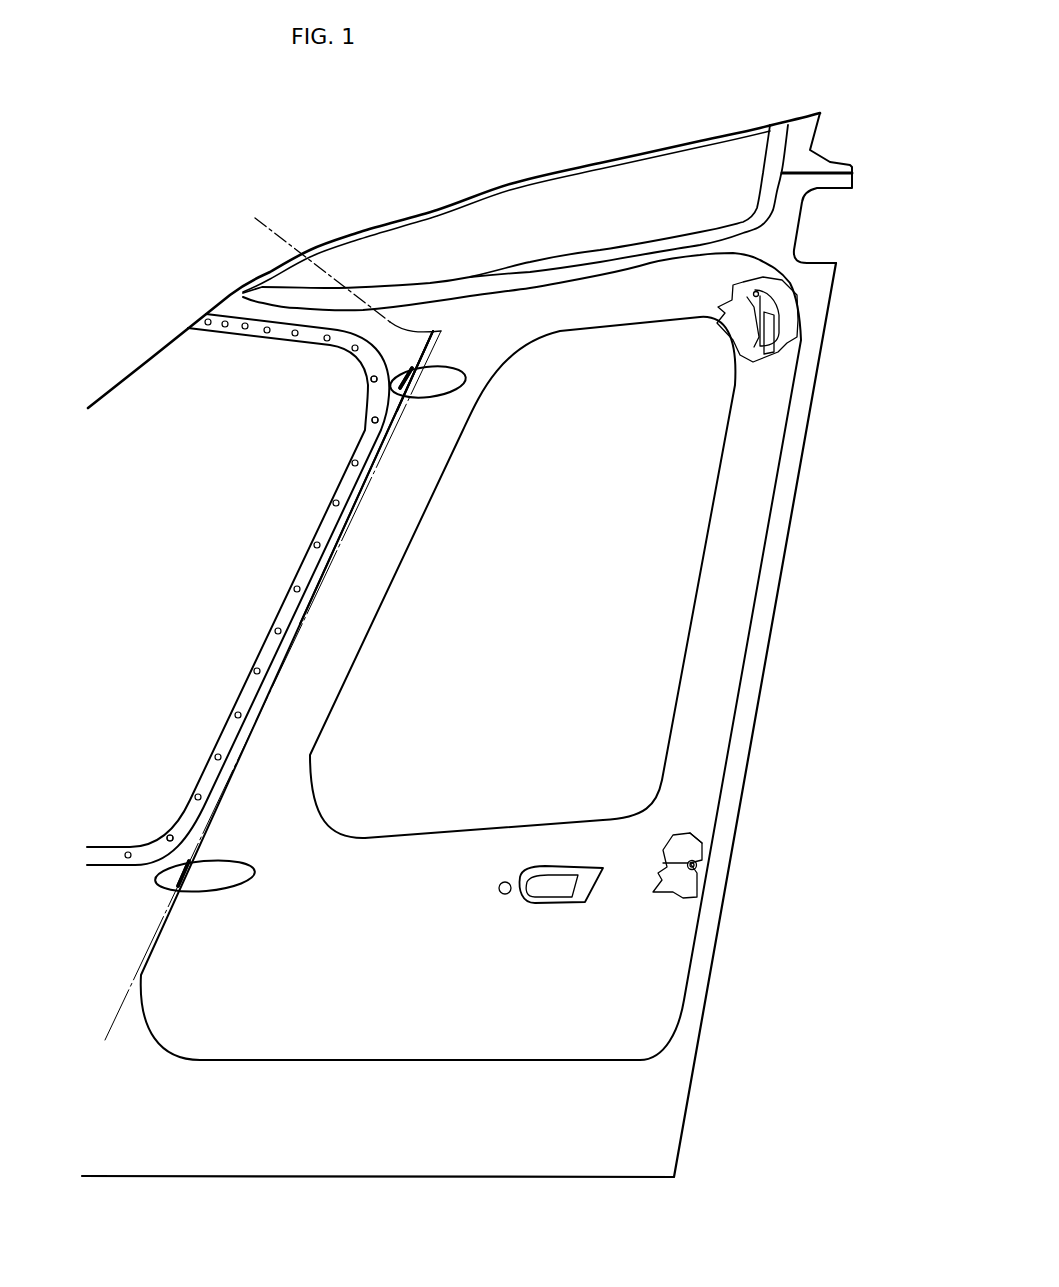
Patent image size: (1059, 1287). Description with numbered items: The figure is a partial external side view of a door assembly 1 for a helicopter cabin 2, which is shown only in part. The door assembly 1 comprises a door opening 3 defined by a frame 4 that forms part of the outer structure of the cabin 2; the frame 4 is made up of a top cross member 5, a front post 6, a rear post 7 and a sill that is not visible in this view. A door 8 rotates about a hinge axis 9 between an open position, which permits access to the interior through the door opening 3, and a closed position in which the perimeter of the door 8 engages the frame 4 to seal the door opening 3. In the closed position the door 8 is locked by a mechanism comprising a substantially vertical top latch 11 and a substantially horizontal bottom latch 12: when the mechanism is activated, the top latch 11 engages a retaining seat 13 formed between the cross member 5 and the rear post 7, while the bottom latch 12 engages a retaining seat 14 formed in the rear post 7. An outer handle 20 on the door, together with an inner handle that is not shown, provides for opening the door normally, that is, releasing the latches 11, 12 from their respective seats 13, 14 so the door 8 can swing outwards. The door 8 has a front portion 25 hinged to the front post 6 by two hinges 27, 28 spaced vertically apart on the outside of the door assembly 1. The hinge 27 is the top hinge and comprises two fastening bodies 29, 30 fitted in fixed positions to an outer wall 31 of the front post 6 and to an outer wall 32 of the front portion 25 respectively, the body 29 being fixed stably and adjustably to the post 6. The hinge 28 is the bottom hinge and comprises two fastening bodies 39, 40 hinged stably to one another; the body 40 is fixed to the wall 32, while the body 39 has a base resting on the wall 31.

The door assembly 1 is at (674, 115).
The helicopter cabin 2 is at (378, 257).
The door opening 3 is at (607, 288).
The frame 4 is at (442, 330).
The top cross member 5 is at (776, 273).
The front post 6 is at (298, 616).
The rear post 7 is at (705, 851).
The door 8 is at (735, 640).
The hinge axis 9 is at (273, 621).
The top latch 11 is at (768, 350).
The bottom latch 12 is at (680, 890).
The retaining seat 13 is at (751, 329).
The retaining seat 14 is at (695, 888).
The outer handle 20 is at (548, 888).
The front portion 25 is at (345, 576).
The hinge 27 is at (380, 391).
The hinge 28 is at (154, 894).
The fastening body 29 is at (391, 370).
The fastening body 30 is at (447, 382).
The outer wall 31 is at (384, 405).
The outer wall 32 is at (426, 414).
The fastening body 39 is at (170, 872).
The fastening body 40 is at (227, 878).